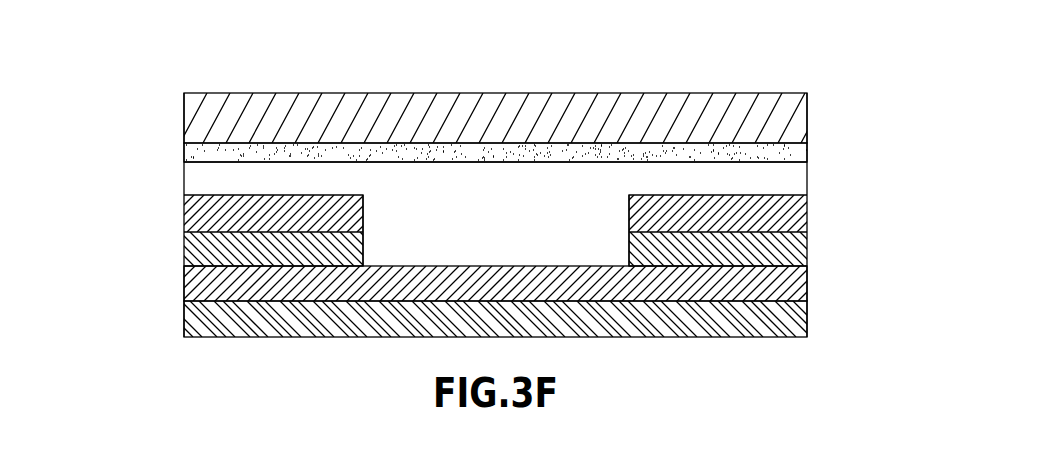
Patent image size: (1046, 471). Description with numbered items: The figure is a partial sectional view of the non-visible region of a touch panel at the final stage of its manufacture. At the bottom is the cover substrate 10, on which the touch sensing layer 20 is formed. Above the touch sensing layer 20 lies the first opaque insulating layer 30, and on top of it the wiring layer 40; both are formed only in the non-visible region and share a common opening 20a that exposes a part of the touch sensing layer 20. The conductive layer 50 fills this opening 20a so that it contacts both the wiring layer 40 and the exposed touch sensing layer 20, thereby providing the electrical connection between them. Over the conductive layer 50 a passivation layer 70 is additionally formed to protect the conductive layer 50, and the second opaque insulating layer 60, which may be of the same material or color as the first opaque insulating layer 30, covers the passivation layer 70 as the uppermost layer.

The cover substrate 10 is at (808, 317).
The touch sensing layer 20 is at (808, 282).
The opening 20a is at (586, 212).
The first opaque insulating layer 30 is at (808, 248).
The wiring layer 40 is at (808, 212).
The conductive layer 50 is at (523, 245).
The second opaque insulating layer 60 is at (808, 113).
The passivation layer 70 is at (808, 151).